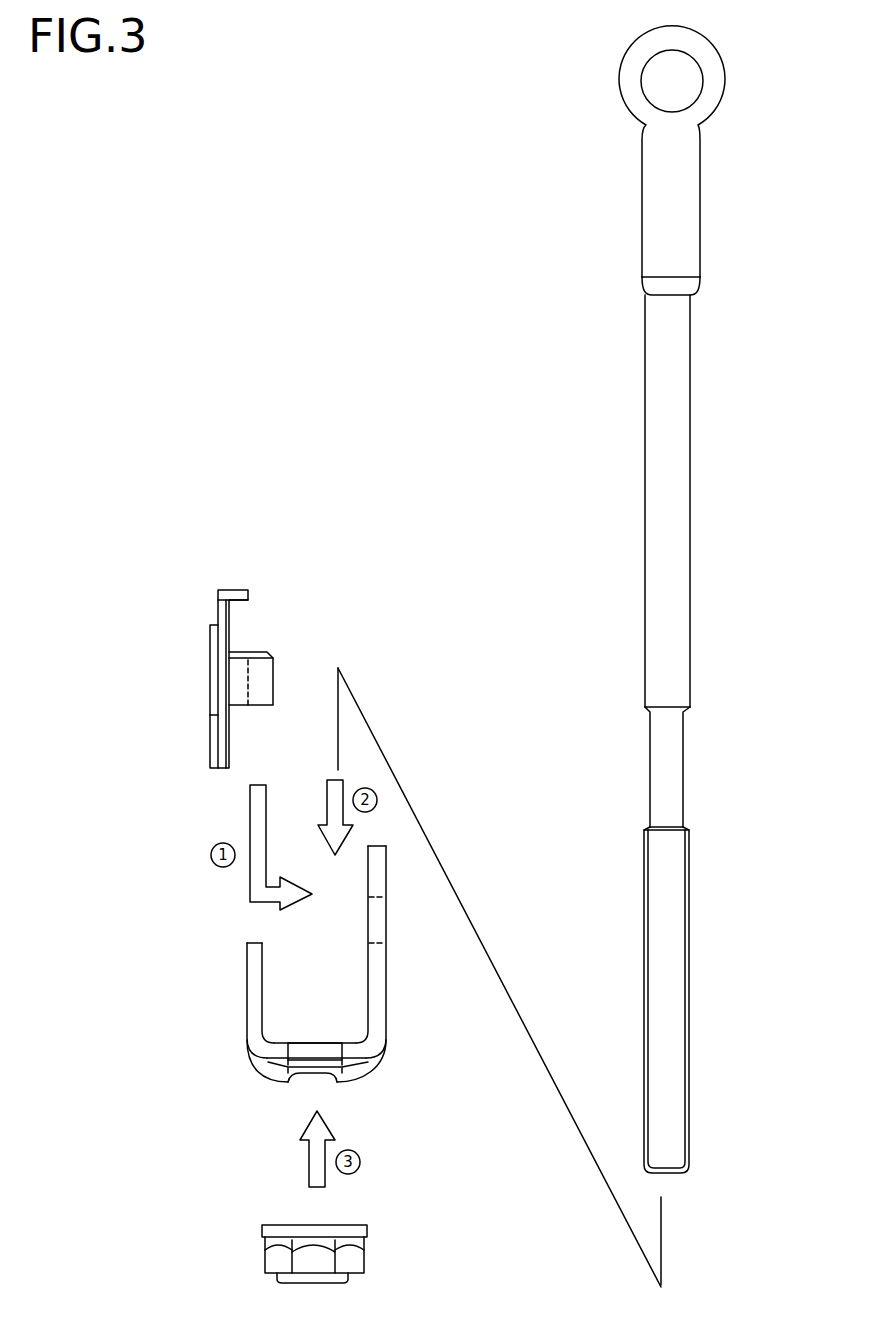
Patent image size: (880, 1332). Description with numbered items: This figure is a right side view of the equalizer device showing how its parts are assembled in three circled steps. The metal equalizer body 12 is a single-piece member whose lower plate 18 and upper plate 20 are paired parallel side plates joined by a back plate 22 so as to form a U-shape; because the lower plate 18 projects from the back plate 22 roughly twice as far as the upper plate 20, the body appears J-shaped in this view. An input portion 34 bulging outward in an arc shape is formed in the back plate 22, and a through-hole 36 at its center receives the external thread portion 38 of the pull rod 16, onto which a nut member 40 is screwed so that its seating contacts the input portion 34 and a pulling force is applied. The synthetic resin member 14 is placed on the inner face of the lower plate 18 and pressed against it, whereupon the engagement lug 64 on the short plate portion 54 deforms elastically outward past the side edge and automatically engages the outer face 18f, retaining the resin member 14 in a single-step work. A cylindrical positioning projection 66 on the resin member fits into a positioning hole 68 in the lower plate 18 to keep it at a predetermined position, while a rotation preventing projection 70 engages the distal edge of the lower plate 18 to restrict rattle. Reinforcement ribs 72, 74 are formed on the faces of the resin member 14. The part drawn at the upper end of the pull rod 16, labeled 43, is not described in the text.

The equalizer body 12 is at (326, 999).
The synthetic resin member 14 is at (230, 651).
The pull rod 16 is at (648, 599).
The lower plate 18 is at (386, 964).
The outer face 18f is at (388, 993).
The upper plate 20 is at (253, 989).
The back plate 22 is at (313, 1052).
The input portion 34 is at (281, 1078).
The through-hole 36 is at (330, 1082).
The external thread portion 38 is at (663, 993).
The nut member 40 is at (350, 1253).
The eye portion 43 is at (633, 80).
The short plate portion 54 is at (223, 642).
The engagement lug 64 is at (257, 681).
The positioning projection 66 is at (258, 652).
The positioning hole 68 is at (384, 940).
The rotation preventing projection 70 is at (237, 595).
The reinforcement rib 72 is at (214, 688).
The reinforcement rib 74 is at (232, 727).